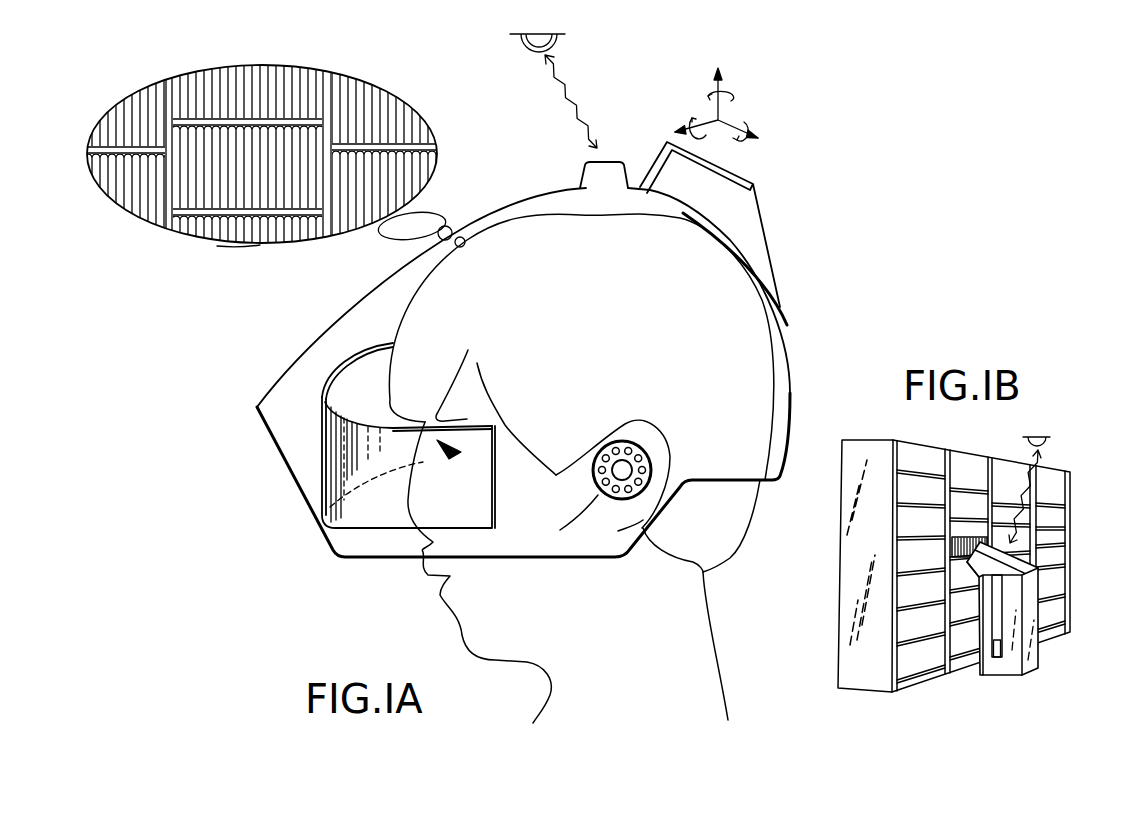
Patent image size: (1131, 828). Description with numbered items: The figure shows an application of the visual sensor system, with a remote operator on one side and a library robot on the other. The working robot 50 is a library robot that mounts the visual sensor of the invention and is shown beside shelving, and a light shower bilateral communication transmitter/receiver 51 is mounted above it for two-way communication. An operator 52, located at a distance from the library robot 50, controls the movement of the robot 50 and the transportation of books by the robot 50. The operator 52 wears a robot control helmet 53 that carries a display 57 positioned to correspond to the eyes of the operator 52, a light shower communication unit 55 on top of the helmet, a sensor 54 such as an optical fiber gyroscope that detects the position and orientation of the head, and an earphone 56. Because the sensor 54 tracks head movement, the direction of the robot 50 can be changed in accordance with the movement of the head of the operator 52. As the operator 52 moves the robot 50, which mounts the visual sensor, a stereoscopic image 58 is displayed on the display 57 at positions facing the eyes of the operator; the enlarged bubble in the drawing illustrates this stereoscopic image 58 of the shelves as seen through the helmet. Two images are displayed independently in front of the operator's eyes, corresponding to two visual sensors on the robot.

In FIG. 1B, the working robot 50 is at (1030, 660).
In FIG. 1B, the light shower bilateral communication transmitter/receiver 51 is at (1050, 446).
In FIG. 1A, the operator 52 is at (677, 570).
In FIG. 1A, the robot control helmet 53 is at (772, 332).
In FIG. 1A, the sensor 54 is at (742, 220).
In FIG. 1A, the light shower communication unit 55 is at (613, 172).
In FIG. 1A, the earphone 56 is at (610, 493).
In FIG. 1A, the display 57 is at (320, 387).
In FIG. 1A, the stereoscopic image 58 is at (360, 98).